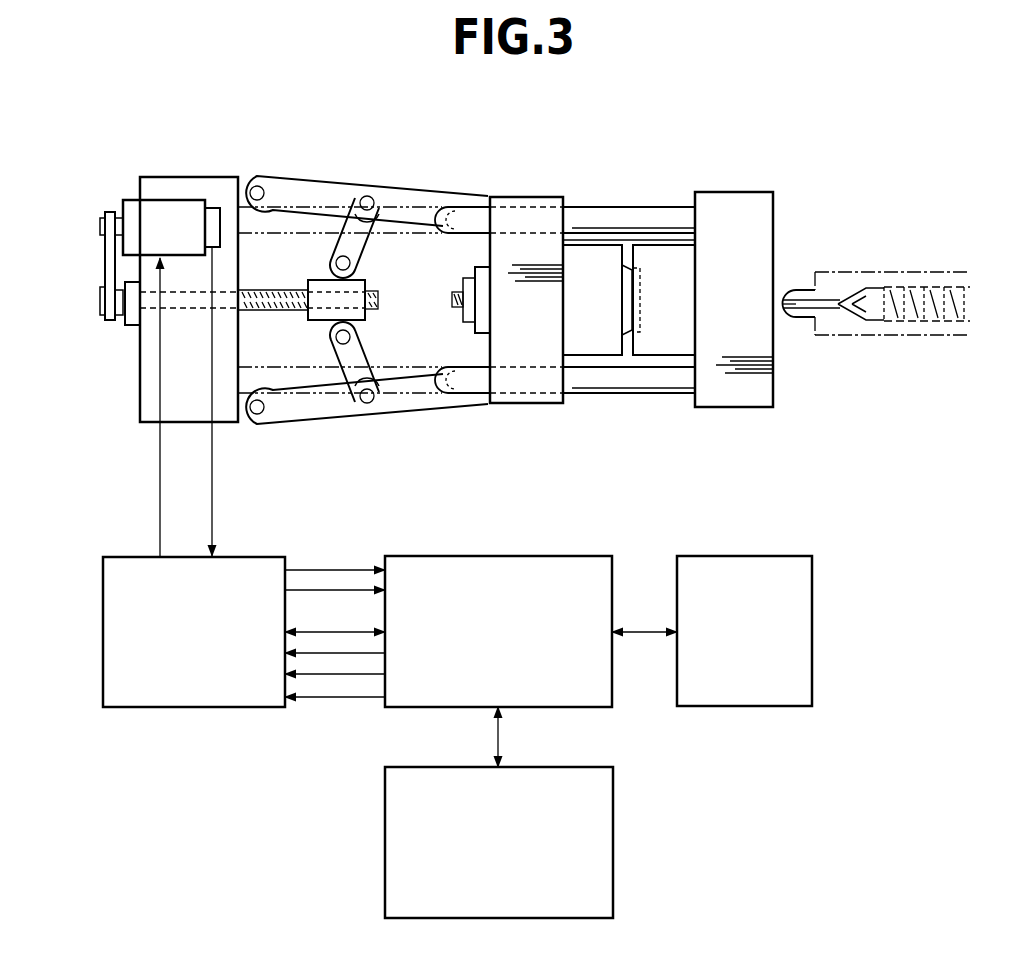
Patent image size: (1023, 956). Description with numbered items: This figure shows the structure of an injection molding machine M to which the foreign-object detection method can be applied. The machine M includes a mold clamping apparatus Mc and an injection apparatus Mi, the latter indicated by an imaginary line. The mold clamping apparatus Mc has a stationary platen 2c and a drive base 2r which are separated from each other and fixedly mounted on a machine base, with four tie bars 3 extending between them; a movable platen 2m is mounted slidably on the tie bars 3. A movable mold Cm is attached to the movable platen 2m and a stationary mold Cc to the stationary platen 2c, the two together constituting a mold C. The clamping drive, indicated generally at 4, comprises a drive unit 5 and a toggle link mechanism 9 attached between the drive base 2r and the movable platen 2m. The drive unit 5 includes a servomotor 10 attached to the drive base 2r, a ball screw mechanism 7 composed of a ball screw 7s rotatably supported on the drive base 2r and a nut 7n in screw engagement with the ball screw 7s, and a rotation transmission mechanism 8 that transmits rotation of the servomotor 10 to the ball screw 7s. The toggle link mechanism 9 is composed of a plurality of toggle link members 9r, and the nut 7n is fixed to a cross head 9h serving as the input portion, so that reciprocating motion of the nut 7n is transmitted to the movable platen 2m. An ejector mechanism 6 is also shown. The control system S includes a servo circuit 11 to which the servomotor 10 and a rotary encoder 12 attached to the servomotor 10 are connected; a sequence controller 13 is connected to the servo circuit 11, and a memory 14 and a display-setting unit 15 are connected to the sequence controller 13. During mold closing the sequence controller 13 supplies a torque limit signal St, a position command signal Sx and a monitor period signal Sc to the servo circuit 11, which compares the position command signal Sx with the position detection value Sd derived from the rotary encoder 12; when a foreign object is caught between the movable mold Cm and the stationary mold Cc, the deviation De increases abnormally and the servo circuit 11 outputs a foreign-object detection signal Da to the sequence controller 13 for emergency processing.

The drive base 2r is at (221, 177).
The movable platen 2m is at (517, 197).
The stationary platen 2c is at (745, 192).
The tie bars 3 is at (585, 207).
The mold clamping device 4 is at (327, 168).
The drive unit 5 is at (92, 208).
The ejector mechanism 6 is at (482, 340).
The ball screw mechanism 7 is at (378, 278).
The ball screw 7s is at (285, 290).
The nut 7n is at (317, 322).
The rotation transmission mechanism 8 is at (97, 334).
The toggle link mechanism 9 is at (355, 416).
The toggle link members 9r is at (370, 250).
The cross head 9h is at (367, 317).
The servomotor 10 is at (133, 203).
The servo circuit 11 is at (127, 556).
The rotary encoder 12 is at (211, 208).
The sequence controller 13 is at (513, 556).
The memory 14 is at (727, 556).
The display-setting unit 15 is at (613, 795).
The injection molding machine M is at (865, 165).
The mold clamping apparatus Mc is at (620, 165).
The injection apparatus Mi is at (915, 265).
The mold C is at (650, 240).
The movable mold Cm is at (583, 355).
The stationary mold Cc is at (660, 355).
The control system S is at (805, 535).
The position detection value Sd is at (302, 568).
The deviation De is at (325, 632).
The foreign-object detection signal Da is at (352, 590).
The torque limit signal St is at (318, 653).
The position command signal Sx is at (337, 674).
The monitor period signal Sc is at (350, 697).